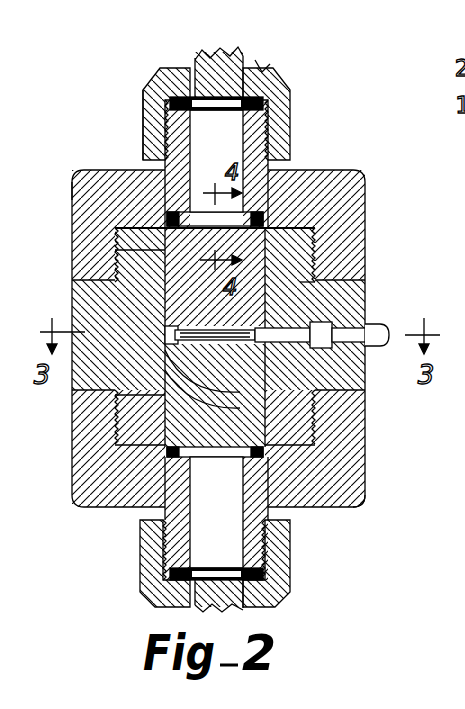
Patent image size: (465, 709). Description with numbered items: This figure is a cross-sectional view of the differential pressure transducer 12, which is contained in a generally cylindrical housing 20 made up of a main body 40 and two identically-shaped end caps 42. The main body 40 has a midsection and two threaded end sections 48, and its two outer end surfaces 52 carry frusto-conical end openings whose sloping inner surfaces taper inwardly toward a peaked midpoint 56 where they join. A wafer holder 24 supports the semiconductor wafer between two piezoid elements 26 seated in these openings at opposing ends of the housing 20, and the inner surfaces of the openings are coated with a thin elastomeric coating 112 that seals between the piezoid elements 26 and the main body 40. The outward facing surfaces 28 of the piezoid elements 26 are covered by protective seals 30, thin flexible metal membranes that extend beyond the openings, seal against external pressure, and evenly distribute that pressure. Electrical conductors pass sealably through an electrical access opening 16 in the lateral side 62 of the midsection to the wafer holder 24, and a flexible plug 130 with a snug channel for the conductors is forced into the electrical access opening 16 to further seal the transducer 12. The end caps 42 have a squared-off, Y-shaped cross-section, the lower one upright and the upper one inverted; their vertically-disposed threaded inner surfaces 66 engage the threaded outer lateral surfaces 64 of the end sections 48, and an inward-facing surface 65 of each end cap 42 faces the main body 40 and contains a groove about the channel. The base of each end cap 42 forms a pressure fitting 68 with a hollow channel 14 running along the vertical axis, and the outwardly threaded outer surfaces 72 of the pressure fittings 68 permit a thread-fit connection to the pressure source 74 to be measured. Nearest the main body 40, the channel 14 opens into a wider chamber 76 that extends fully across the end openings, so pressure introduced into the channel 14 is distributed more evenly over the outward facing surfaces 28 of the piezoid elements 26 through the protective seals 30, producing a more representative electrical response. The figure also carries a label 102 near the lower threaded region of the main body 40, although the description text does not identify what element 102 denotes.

The differential pressure transducer 12 is at (92, 114).
The channel 14 is at (284, 96).
The electrical access opening 16 is at (333, 342).
The housing 20 is at (392, 586).
The wafer holder 24 is at (112, 282).
The piezoid elements 26 is at (160, 290).
The outward facing surfaces 28 is at (78, 176).
The protective seals 30 is at (253, 232).
The main body 40 is at (318, 300).
The end caps 42 is at (352, 172).
The threaded end sections 48 is at (312, 332).
The outer end surfaces 52 is at (300, 508).
The peaked midpoint 56 is at (168, 334).
The lateral side 62 is at (364, 376).
The threaded outer lateral surfaces 64 is at (300, 418).
The inward-facing surface 65 is at (304, 170).
The threaded inner surfaces 66 is at (305, 440).
The pressure fitting 68 is at (177, 98).
The outer surfaces 72 is at (148, 92).
The pressure source 74 is at (275, 68).
The chamber 76 is at (163, 180).
The seal 102 is at (160, 388).
The elastomeric coating 112 is at (308, 280).
The flexible plug 130 is at (388, 330).